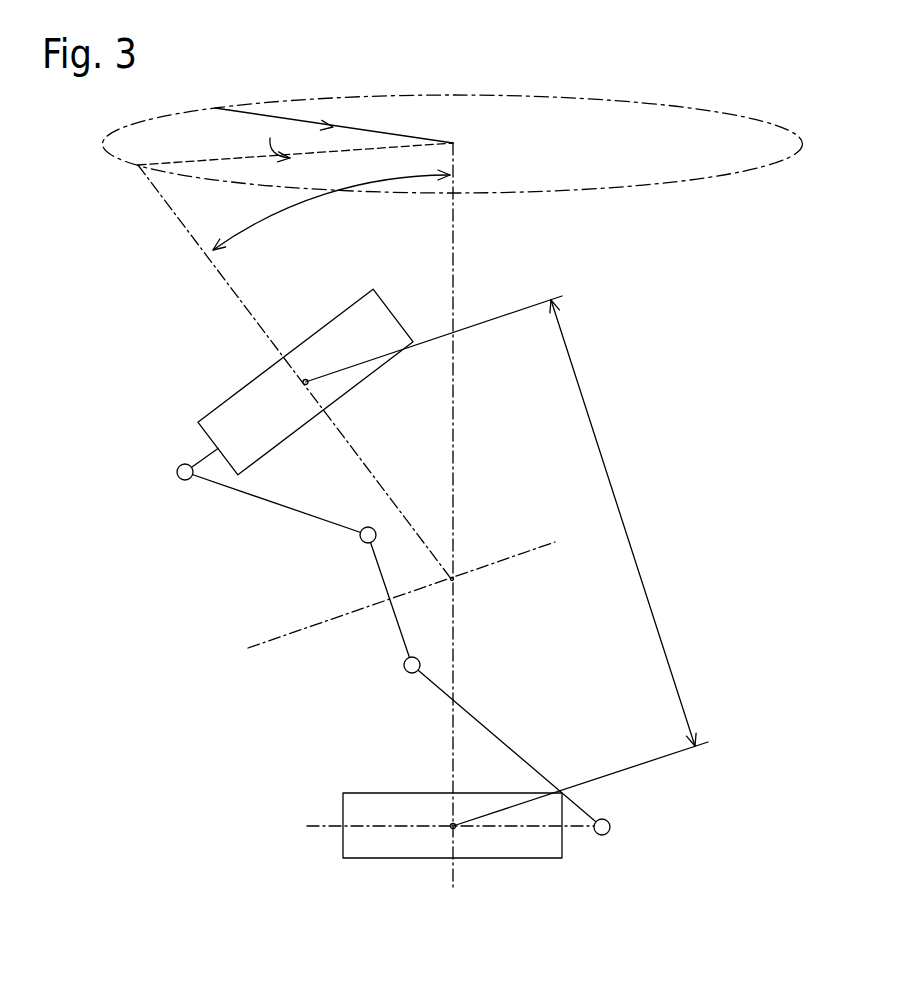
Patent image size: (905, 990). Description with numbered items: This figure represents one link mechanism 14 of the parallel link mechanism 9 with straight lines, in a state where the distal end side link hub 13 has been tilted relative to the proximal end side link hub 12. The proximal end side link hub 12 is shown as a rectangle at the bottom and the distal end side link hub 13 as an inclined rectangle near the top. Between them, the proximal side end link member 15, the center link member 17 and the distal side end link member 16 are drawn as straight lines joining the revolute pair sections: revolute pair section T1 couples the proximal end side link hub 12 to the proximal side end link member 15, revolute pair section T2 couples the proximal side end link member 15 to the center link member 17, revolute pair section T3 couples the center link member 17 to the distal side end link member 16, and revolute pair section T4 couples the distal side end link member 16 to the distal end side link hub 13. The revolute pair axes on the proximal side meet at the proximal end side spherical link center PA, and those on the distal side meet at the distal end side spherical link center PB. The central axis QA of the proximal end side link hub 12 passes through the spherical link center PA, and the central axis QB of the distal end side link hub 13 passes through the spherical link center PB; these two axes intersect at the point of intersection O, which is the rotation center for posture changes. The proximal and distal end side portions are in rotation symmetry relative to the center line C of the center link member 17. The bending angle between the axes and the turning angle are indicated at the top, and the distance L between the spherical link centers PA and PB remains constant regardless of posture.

The parallel link mechanism 9 is at (118, 312).
The proximal end side link hub 12 is at (343, 823).
The distal end side link hub 13 is at (237, 388).
The link mechanism 14 is at (265, 592).
The proximal side end link member 15 is at (508, 743).
The distal side end link member 16 is at (275, 508).
The center link member 17 is at (398, 630).
The revolute pair section T1 is at (612, 827).
The revolute pair section T2 is at (406, 672).
The revolute pair section T3 is at (365, 542).
The revolute pair section T4 is at (177, 469).
The proximal end side spherical link center PA is at (456, 829).
The distal end side spherical link center PB is at (308, 386).
The central axis of the proximal end side link hub QA is at (453, 872).
The central axis of the distal end side link hub QB is at (275, 343).
The center line of the center link member C is at (503, 562).
The point of intersection O is at (455, 583).
The distance between spherical link centers L is at (507, 561).